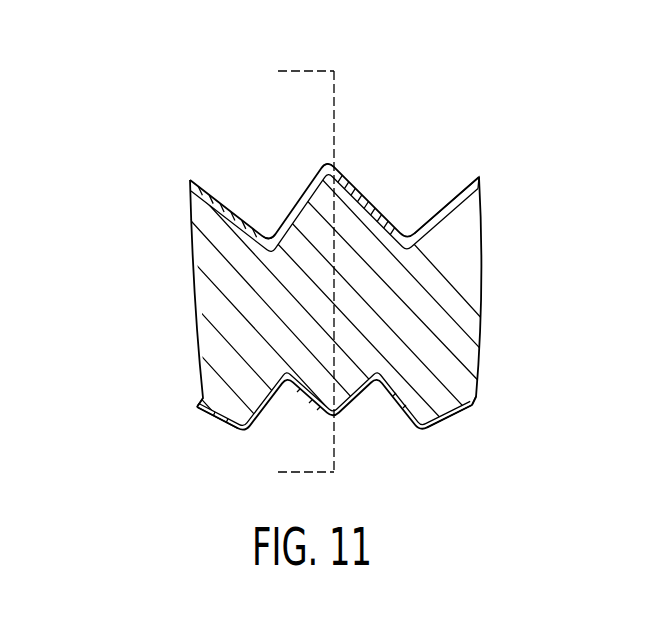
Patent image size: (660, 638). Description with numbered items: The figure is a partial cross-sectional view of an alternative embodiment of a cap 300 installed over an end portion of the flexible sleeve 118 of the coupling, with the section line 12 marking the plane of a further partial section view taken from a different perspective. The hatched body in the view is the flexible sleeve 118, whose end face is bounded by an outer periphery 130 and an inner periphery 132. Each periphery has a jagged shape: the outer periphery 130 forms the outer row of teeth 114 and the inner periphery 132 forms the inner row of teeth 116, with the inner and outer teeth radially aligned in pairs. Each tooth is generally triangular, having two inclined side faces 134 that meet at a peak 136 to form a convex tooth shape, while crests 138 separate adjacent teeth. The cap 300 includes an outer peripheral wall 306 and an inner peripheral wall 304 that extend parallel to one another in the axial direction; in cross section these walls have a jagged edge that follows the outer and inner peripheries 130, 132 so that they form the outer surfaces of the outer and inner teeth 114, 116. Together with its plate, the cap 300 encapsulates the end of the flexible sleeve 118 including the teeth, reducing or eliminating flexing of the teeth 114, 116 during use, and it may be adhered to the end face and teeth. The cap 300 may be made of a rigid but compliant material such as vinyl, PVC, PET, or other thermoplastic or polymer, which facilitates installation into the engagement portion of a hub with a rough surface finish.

The section line 12- 12 is at (282, 273).
The outer row of teeth 114 is at (492, 195).
The inner row of teeth 116 is at (502, 397).
The flexible sleeve 118 is at (457, 312).
The outer periphery 130 is at (363, 187).
The inner periphery 132 is at (447, 422).
The inclined side faces 134 is at (303, 187).
The peak 136 is at (347, 165).
The crests 138 is at (265, 236).
The cap 300 is at (148, 297).
The inner peripheral wall 304 is at (202, 403).
The outer peripheral wall 306 is at (195, 190).